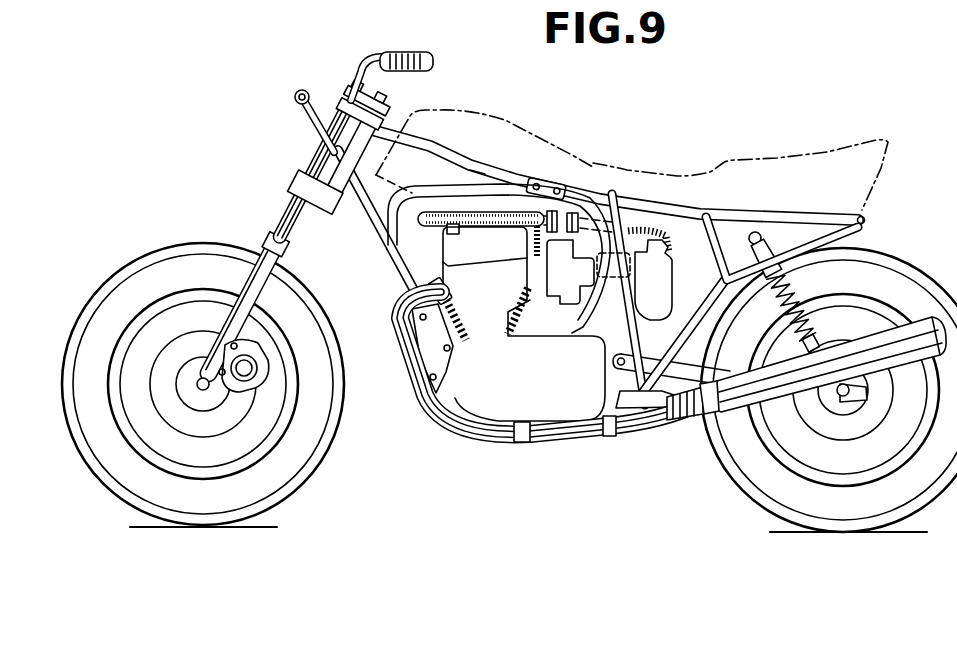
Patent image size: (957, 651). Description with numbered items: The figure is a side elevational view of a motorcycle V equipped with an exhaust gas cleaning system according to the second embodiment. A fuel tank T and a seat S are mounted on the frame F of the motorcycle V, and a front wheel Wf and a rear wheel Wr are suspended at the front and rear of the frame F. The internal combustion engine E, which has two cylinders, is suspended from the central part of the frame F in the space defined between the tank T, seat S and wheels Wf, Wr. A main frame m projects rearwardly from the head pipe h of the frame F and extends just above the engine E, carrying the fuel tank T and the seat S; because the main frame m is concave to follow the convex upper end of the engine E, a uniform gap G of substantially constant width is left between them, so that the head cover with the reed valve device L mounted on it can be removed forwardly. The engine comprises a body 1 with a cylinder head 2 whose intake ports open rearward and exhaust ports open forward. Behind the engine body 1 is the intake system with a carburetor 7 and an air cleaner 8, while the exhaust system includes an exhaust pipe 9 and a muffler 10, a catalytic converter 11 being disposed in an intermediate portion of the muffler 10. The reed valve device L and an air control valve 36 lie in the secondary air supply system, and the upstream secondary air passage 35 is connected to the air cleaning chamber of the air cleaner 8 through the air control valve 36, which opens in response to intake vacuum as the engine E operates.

The motorcycle V is at (582, 109).
The fuel tank T is at (457, 116).
The seat S is at (763, 160).
The frame F is at (423, 149).
The main frame m is at (477, 168).
The head pipe h is at (337, 157).
The gap G is at (447, 203).
The reed valve device L is at (473, 212).
The upstream secondary air passage 35 is at (500, 212).
The air control valve 36 is at (562, 222).
The cylinder head 2 is at (447, 275).
The carburetor 7 is at (575, 292).
The air cleaner 8 is at (658, 292).
The internal combustion engine E is at (512, 302).
The engine body 1 is at (530, 404).
The exhaust pipe 9 is at (437, 414).
The catalytic converter 11 is at (692, 414).
The muffler 10 is at (787, 396).
The front wheel Wf is at (324, 452).
The rear wheel Wr is at (731, 472).